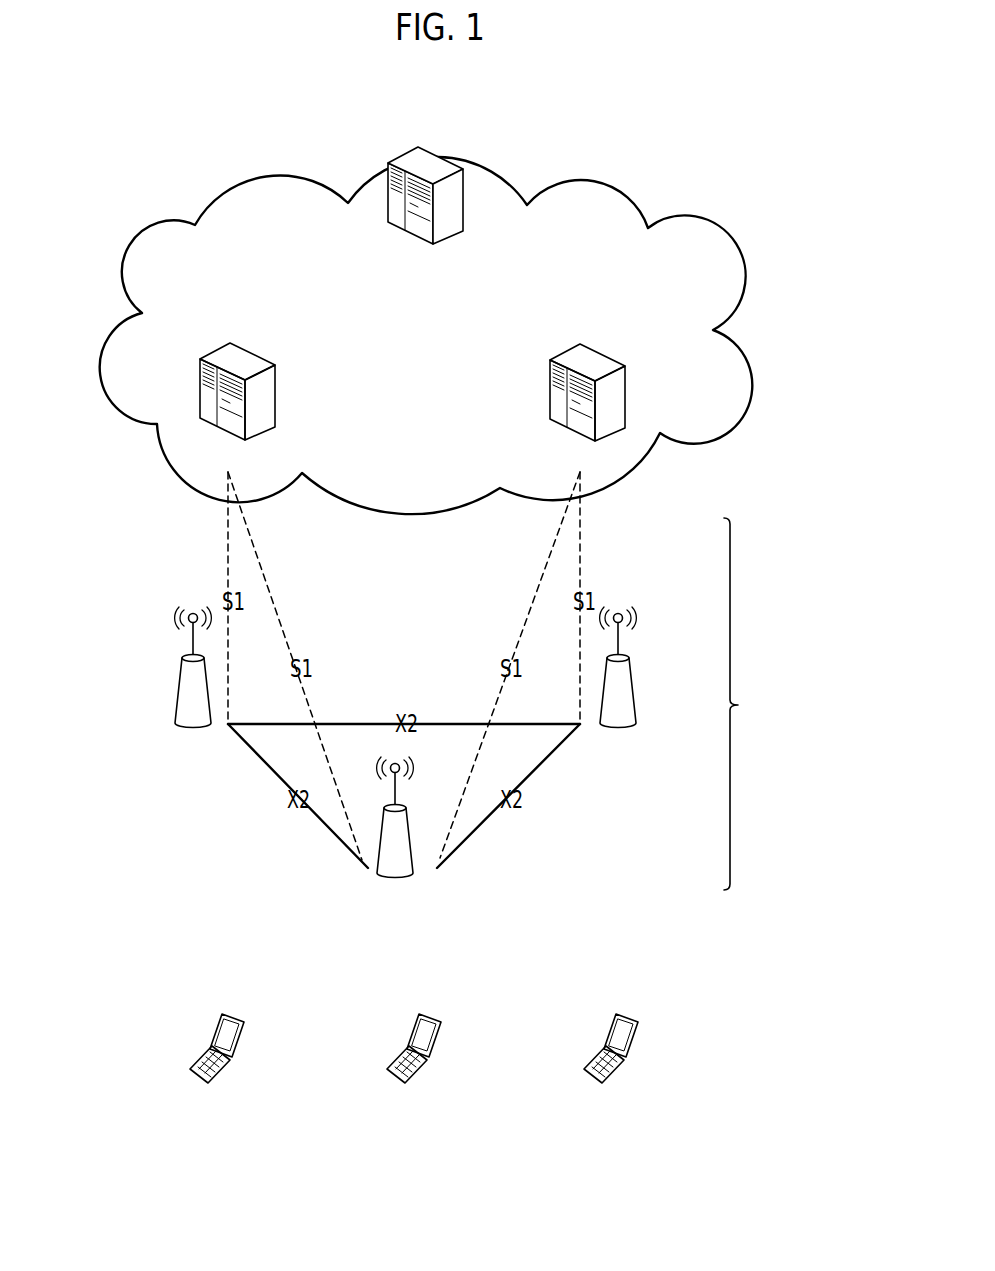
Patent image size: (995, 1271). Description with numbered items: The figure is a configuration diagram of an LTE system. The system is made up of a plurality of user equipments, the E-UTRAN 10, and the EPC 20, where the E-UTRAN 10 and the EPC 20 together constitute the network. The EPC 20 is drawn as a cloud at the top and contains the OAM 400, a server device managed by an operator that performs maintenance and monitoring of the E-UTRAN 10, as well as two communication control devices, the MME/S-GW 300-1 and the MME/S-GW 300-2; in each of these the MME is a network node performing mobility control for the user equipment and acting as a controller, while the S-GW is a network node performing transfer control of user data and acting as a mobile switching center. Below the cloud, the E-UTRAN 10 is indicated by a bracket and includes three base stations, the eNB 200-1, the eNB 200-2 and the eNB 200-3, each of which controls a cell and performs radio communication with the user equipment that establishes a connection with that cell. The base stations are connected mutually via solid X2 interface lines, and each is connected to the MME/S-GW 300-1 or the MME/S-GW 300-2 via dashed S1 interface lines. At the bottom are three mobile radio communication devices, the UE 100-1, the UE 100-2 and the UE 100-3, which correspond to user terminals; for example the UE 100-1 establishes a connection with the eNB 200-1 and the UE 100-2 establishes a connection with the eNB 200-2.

The E-UTRAN 10 is at (781, 704).
The EPC 20 is at (630, 195).
The UE 100-1 is at (237, 1012).
The UE 100-2 is at (434, 1012).
The UE 100-3 is at (631, 1012).
The eNB 200-1 is at (178, 690).
The eNB 200-2 is at (416, 850).
The eNB 200-3 is at (655, 664).
The MME/S-GW 300-1 is at (283, 332).
The MME/S-GW 300-2 is at (617, 333).
The OAM 400 is at (422, 150).